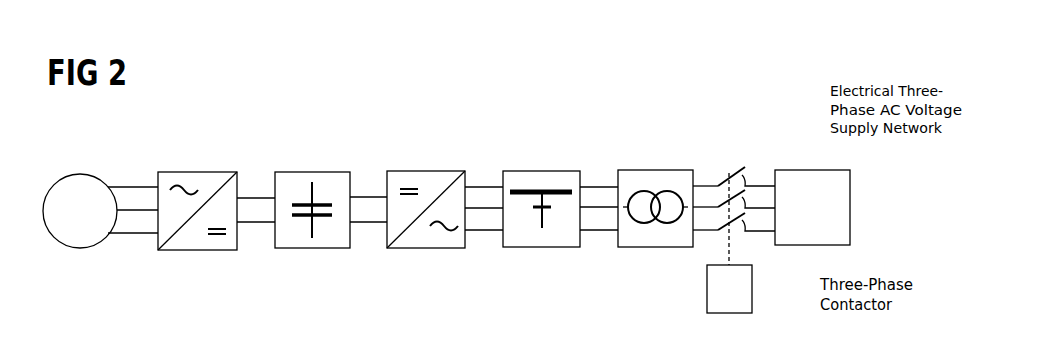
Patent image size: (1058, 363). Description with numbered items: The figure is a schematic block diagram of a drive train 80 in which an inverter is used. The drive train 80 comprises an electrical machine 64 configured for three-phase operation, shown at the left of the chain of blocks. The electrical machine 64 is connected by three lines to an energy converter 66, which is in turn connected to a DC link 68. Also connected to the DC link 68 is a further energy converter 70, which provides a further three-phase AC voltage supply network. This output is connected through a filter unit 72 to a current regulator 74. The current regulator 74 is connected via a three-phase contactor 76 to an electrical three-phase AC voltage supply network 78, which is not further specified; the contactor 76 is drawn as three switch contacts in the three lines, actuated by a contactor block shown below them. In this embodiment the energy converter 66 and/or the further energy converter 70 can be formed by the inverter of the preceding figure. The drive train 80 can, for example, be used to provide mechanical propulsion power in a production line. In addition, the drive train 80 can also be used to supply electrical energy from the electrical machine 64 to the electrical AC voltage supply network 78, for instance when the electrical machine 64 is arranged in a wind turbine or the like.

The electrical machine 64 is at (80, 172).
The energy converter 66 is at (195, 170).
The DC link 68 is at (310, 170).
The further energy converter 70 is at (423, 169).
The filter unit 72 is at (538, 169).
The current regulator 74 is at (650, 168).
The three-phase contactor 76 is at (752, 288).
The electrical three-phase AC voltage supply network 78 is at (807, 166).
The drive train 80 is at (746, 122).